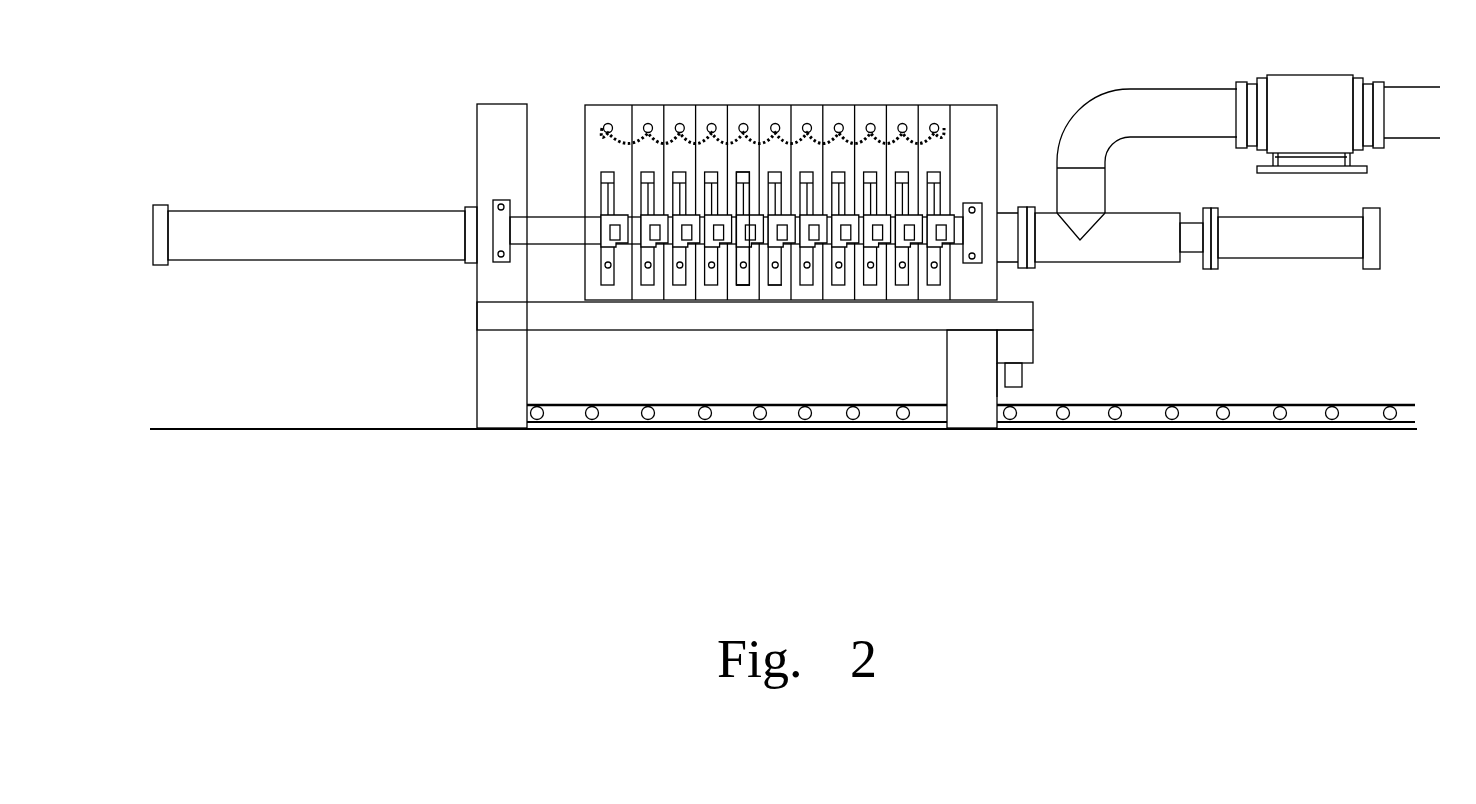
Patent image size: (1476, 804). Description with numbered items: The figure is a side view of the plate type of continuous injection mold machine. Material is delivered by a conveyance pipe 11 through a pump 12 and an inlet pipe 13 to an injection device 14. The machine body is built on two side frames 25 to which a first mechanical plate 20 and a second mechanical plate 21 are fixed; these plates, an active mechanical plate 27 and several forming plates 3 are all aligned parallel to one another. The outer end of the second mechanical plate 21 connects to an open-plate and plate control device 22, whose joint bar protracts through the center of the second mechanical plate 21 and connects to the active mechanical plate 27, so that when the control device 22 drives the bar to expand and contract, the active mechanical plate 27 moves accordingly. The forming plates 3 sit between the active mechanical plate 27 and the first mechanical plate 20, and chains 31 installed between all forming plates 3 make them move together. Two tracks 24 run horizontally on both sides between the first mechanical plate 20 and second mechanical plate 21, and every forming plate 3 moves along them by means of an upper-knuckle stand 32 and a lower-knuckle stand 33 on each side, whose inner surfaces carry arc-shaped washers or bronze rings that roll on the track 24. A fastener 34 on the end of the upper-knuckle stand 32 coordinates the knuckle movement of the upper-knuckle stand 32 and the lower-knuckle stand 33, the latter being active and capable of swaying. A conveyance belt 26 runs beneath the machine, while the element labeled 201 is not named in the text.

The forming plates 3 is at (838, 113).
The conveyance pipe 11 is at (1418, 88).
The pump 12 is at (1313, 88).
The inlet pipe 13 is at (1140, 220).
The injection device 14 is at (1295, 250).
The first mechanical plate 20 is at (970, 115).
The outlet connection 201 is at (1005, 215).
The second mechanical plate 21 is at (500, 115).
The open-plate and plate control device 22 is at (340, 213).
The tracks 24 is at (552, 216).
The side frames 25 is at (585, 320).
The conveyance belt 26 is at (1350, 405).
The active mechanical plate 27 is at (614, 112).
The chains 31 is at (910, 125).
The upper-knuckle stand 32 is at (742, 172).
The lower-knuckle stand 33 is at (746, 285).
The fastener 34 is at (775, 285).